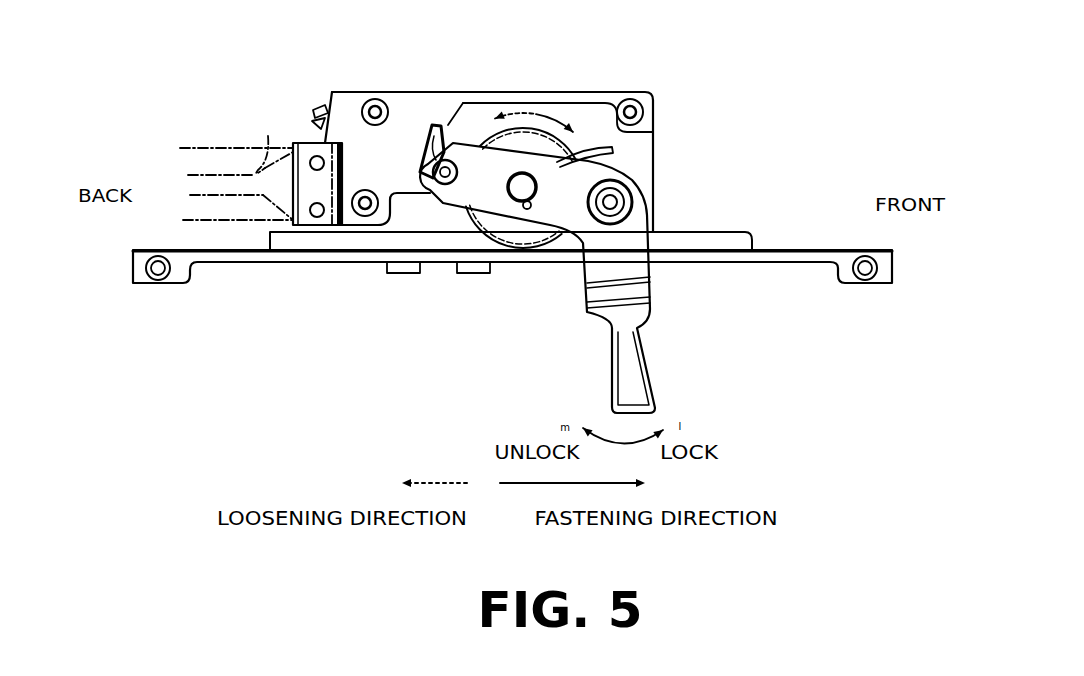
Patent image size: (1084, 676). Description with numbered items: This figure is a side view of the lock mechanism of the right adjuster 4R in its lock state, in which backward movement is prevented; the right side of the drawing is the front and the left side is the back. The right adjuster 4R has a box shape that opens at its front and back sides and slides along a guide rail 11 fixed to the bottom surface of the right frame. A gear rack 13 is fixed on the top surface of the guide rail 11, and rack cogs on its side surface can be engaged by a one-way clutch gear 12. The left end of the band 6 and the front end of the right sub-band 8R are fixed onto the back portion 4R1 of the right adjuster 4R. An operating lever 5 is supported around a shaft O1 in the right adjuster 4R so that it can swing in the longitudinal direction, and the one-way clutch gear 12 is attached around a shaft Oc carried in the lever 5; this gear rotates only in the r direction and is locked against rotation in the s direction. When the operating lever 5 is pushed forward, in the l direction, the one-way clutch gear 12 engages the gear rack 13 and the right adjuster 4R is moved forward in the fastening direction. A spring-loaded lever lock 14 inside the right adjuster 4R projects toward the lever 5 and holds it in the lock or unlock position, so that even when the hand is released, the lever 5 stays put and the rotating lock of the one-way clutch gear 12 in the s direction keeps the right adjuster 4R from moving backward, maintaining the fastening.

The right adjuster 4R is at (437, 100).
The back portion of the right adjuster 4R1 is at (302, 142).
The operating lever 5 is at (623, 348).
The band 6 is at (208, 162).
The right sub-band 8R is at (268, 136).
The guide rail 11 is at (817, 248).
The one-way clutch gear 12 is at (500, 227).
The gear rack 13 is at (715, 240).
The lever lock 14 is at (445, 127).
The shaft O1 is at (618, 200).